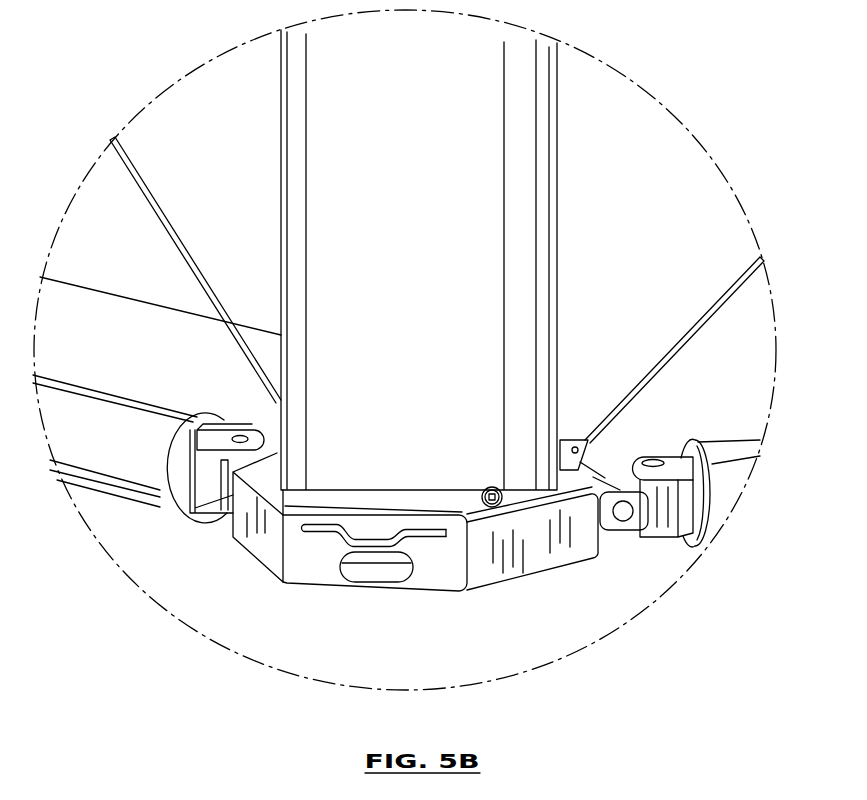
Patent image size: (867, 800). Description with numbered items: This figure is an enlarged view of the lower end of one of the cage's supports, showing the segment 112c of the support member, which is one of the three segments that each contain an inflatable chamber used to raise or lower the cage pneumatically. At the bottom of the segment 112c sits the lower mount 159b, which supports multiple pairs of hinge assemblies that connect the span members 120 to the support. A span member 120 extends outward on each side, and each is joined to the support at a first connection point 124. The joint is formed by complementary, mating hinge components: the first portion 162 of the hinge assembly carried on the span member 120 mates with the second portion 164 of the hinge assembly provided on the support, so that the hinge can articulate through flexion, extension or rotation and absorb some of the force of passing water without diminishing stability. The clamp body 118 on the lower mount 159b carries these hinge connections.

The segment 112c is at (333, 448).
The clamp body 118 is at (427, 540).
The span member 120 is at (137, 487).
The first connection point 124 is at (648, 437).
The lower mount 159b is at (512, 562).
The first portion of the hinge assembly 162 is at (223, 513).
The second portion of the hinge assembly 164 is at (187, 512).